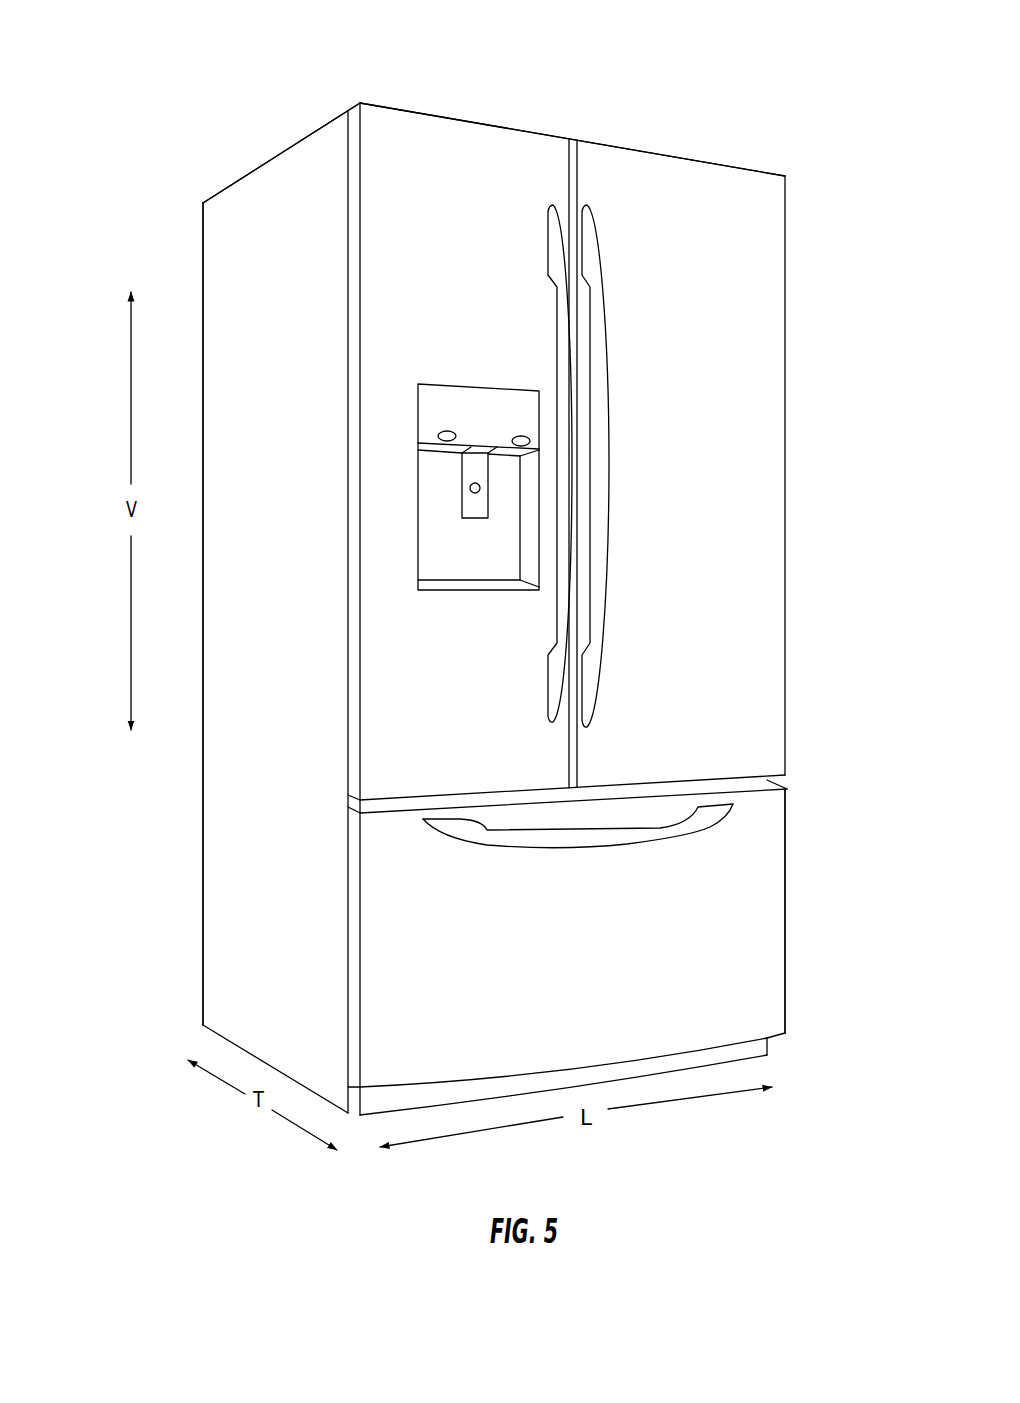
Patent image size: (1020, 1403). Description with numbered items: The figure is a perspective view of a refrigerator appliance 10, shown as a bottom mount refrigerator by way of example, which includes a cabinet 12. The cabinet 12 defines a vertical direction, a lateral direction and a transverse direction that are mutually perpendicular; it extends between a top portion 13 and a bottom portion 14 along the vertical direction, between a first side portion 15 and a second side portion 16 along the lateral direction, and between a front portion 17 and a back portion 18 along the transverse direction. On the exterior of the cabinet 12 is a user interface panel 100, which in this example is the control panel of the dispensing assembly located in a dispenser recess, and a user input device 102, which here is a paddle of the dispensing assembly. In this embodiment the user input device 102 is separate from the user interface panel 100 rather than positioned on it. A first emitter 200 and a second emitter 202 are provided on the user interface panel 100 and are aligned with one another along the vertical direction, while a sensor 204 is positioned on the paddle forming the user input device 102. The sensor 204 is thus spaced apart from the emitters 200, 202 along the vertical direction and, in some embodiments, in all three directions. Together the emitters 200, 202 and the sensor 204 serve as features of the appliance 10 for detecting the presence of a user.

The refrigerator appliance 10 is at (760, 109).
The cabinet 12 is at (221, 230).
The top portion 13 is at (269, 155).
The bottom portion 14 is at (220, 1036).
The first side portion 15 is at (352, 1118).
The second side portion 16 is at (775, 1047).
The front portion 17 is at (399, 107).
The back portion 18 is at (201, 234).
The user interface panel 100 is at (498, 410).
The user input device 102 is at (472, 502).
The first emitter 200 is at (437, 434).
The second emitter 202 is at (528, 437).
The sensor 204 is at (481, 490).